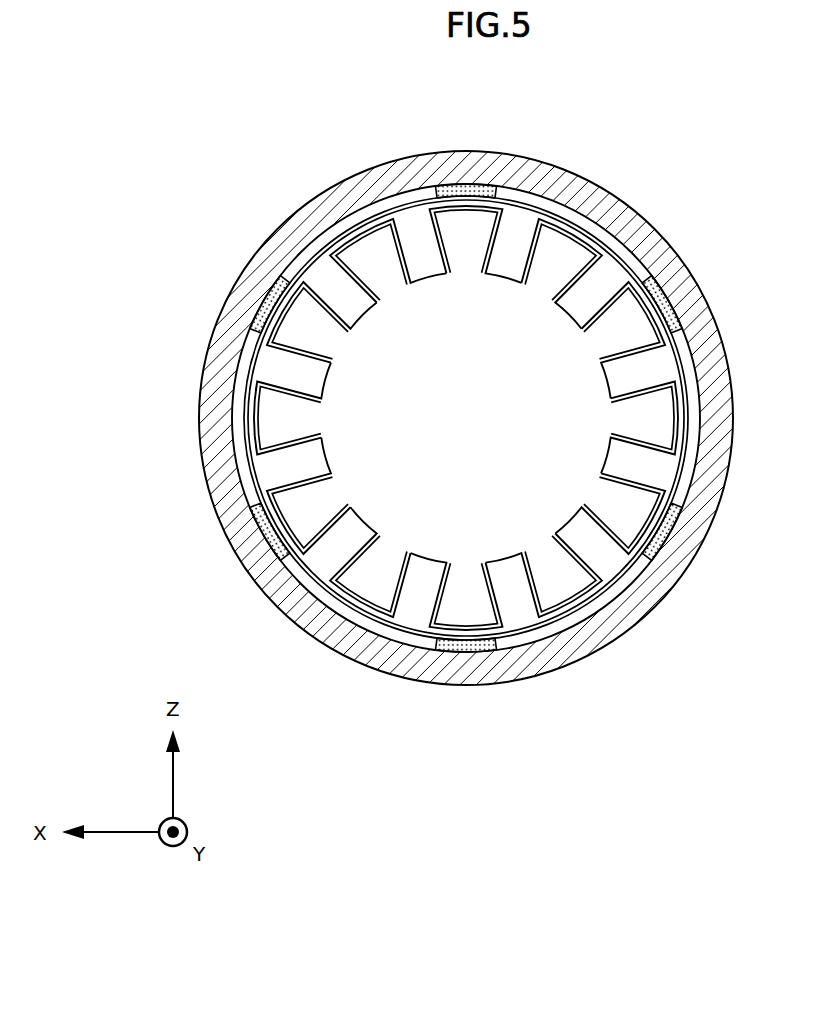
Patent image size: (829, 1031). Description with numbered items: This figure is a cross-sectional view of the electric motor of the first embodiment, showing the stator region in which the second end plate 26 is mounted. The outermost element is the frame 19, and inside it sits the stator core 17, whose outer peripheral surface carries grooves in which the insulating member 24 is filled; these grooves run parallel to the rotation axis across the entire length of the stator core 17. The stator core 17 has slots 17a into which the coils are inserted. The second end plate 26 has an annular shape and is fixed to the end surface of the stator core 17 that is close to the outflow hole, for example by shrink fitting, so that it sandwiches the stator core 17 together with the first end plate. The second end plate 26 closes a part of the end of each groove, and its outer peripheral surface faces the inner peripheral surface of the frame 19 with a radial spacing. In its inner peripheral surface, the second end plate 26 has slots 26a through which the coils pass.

The stator core 17 is at (608, 240).
The slots 17a is at (558, 239).
The frame 19 is at (603, 205).
The insulating member 24 is at (475, 194).
The second end plate 26 is at (623, 277).
The slots 26a is at (580, 240).